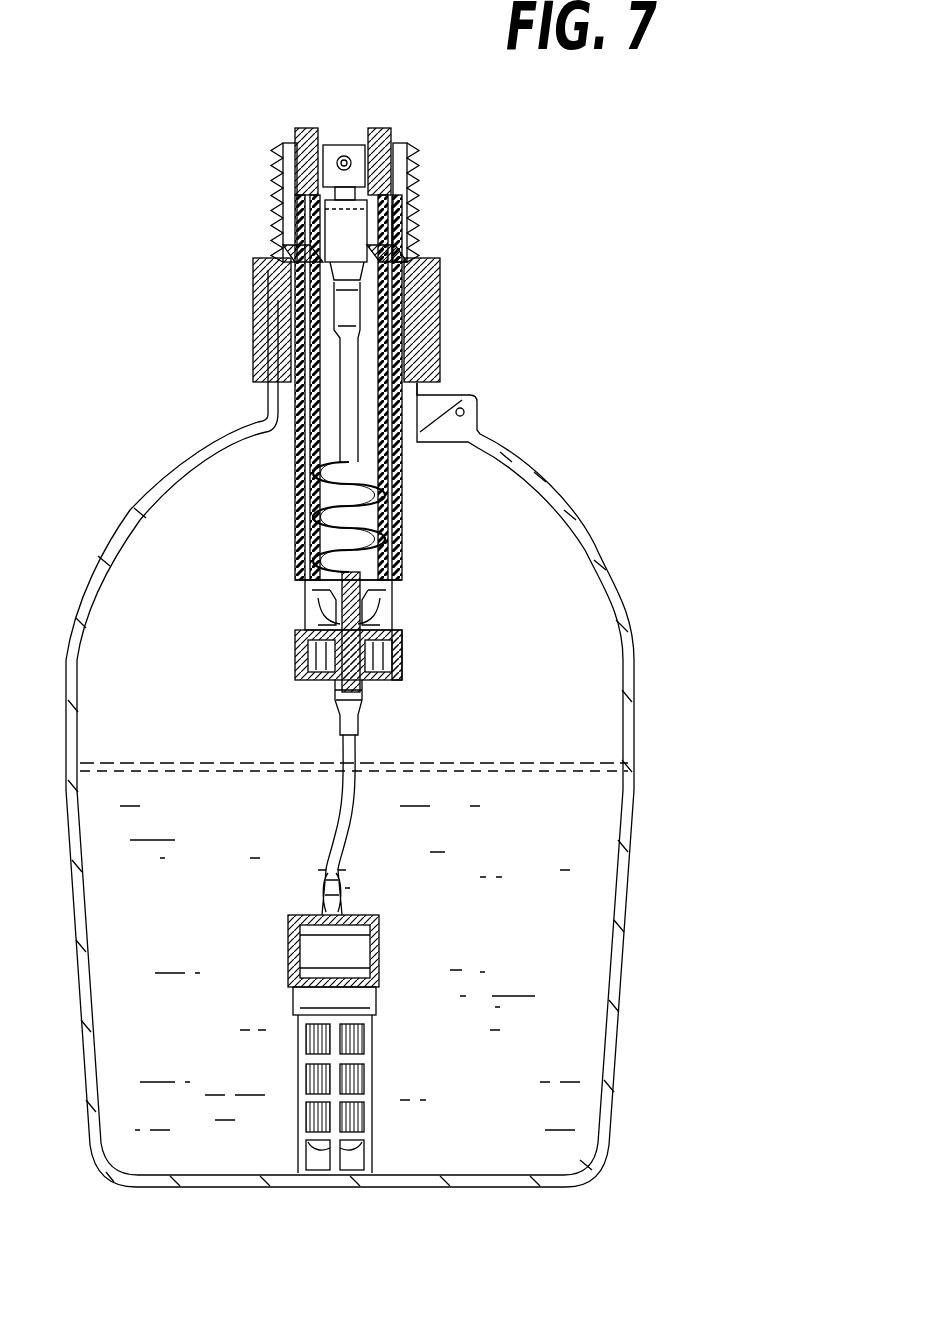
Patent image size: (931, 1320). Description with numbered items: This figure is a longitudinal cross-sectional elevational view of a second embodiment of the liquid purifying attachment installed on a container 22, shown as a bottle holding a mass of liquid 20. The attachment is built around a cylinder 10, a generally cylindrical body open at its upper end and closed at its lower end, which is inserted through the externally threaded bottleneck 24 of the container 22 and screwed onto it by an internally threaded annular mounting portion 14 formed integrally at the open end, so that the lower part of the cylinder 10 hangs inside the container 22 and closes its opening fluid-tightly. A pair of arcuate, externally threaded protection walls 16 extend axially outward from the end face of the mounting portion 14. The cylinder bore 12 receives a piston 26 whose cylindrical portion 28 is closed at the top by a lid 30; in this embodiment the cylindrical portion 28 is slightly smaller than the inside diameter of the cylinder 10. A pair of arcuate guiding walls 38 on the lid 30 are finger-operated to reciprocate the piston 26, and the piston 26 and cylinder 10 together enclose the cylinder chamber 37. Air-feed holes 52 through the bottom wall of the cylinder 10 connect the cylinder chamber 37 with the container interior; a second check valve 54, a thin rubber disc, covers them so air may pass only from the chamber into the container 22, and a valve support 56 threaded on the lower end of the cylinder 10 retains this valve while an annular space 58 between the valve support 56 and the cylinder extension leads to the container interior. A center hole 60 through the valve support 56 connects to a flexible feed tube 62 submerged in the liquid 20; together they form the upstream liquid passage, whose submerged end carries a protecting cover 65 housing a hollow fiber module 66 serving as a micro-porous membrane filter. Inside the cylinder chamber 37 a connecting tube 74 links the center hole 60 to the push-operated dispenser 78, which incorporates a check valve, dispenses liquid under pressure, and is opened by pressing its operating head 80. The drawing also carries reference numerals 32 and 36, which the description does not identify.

The cylinder 10 is at (408, 493).
The cylinder bore 12 is at (300, 472).
The mounting portion 14 is at (265, 303).
The protection walls 16 is at (275, 190).
The liquid 20 is at (200, 937).
The container 22 is at (640, 872).
The bottleneck 24 is at (412, 295).
The piston 26 is at (398, 215).
The cylindrical portion 28 is at (386, 368).
The lid 30 is at (325, 211).
The tube 32 is at (326, 352).
The shoulder 36 is at (300, 252).
The cylinder chamber 37 is at (322, 600).
The guiding walls 38 is at (305, 135).
The air-feed holes 52 is at (318, 606).
The second check valve 54 is at (318, 649).
The valve support 56 is at (398, 652).
The annular space 58 is at (320, 666).
The center hole 60 is at (358, 684).
The feed tube 62 is at (340, 815).
The protecting cover 65 is at (378, 1163).
The hollow fiber module 66 is at (368, 1041).
The connecting tube 74 is at (332, 522).
The dispenser 78 is at (385, 241).
The operating head 80 is at (344, 145).